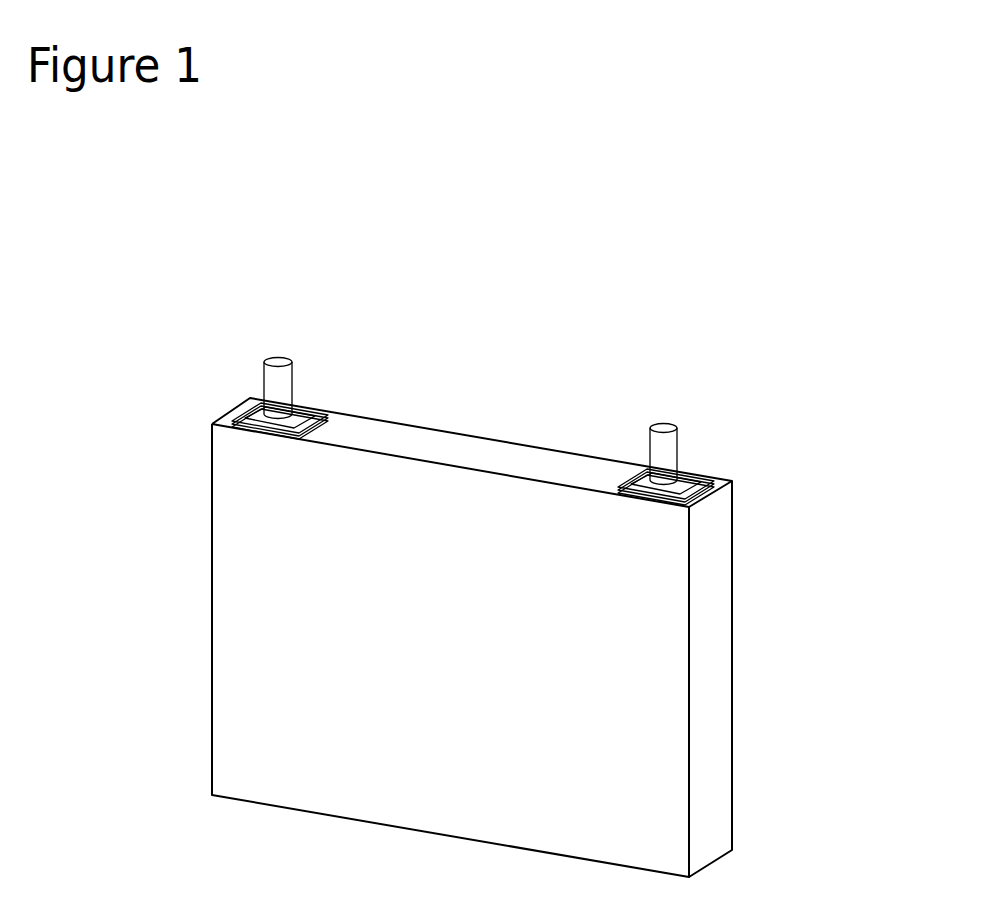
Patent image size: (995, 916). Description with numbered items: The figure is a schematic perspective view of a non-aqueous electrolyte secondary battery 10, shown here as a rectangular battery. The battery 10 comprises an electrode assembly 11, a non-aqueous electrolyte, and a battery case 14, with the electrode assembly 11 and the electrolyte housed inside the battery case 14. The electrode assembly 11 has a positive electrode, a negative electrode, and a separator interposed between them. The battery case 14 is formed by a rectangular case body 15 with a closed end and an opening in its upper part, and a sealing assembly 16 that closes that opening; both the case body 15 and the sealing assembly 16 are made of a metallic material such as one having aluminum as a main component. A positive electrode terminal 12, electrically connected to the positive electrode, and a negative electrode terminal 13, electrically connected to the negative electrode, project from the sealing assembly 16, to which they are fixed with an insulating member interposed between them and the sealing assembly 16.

The non-aqueous electrolyte secondary battery 10 is at (541, 582).
The electrode assembly 11 is at (636, 677).
The positive electrode terminal 12 is at (285, 358).
The negative electrode terminal 13 is at (672, 424).
The battery case 14 is at (777, 550).
The case body 15 is at (753, 605).
The sealing assembly 16 is at (727, 481).